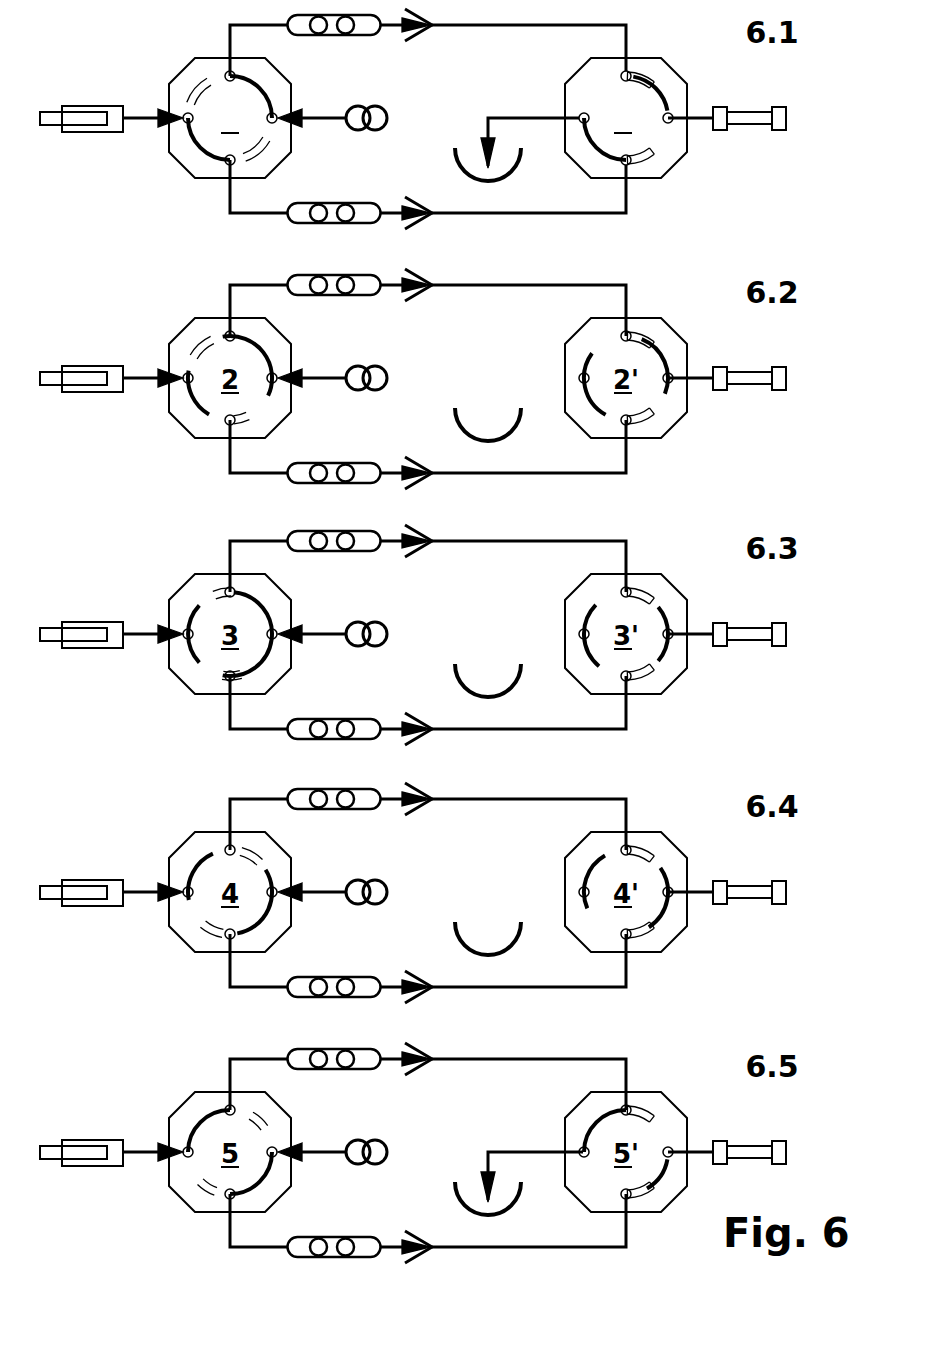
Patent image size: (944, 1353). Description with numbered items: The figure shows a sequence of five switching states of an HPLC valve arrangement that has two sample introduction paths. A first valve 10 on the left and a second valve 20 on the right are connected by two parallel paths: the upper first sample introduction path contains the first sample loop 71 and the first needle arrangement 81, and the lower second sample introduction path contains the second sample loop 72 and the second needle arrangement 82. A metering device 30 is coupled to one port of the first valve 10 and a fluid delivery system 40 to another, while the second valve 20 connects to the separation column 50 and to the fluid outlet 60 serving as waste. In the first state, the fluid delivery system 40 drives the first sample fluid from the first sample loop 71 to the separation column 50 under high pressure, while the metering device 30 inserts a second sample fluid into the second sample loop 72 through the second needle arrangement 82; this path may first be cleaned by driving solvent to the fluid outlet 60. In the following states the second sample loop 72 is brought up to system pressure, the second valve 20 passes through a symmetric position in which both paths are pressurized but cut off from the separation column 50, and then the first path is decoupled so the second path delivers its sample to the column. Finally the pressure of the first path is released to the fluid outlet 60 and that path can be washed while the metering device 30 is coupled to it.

The first valve 10 is at (180, 75).
The second valve 20 is at (675, 65).
The metering device 30 is at (88, 106).
The fluid delivery system 40 is at (370, 105).
The separation column 50 is at (745, 107).
The fluid outlet 60 is at (462, 160).
The first sample loop 71 is at (322, 36).
The second sample loop 72 is at (332, 223).
The first needle arrangement 81 is at (424, 36).
The second needle arrangement 82 is at (425, 223).